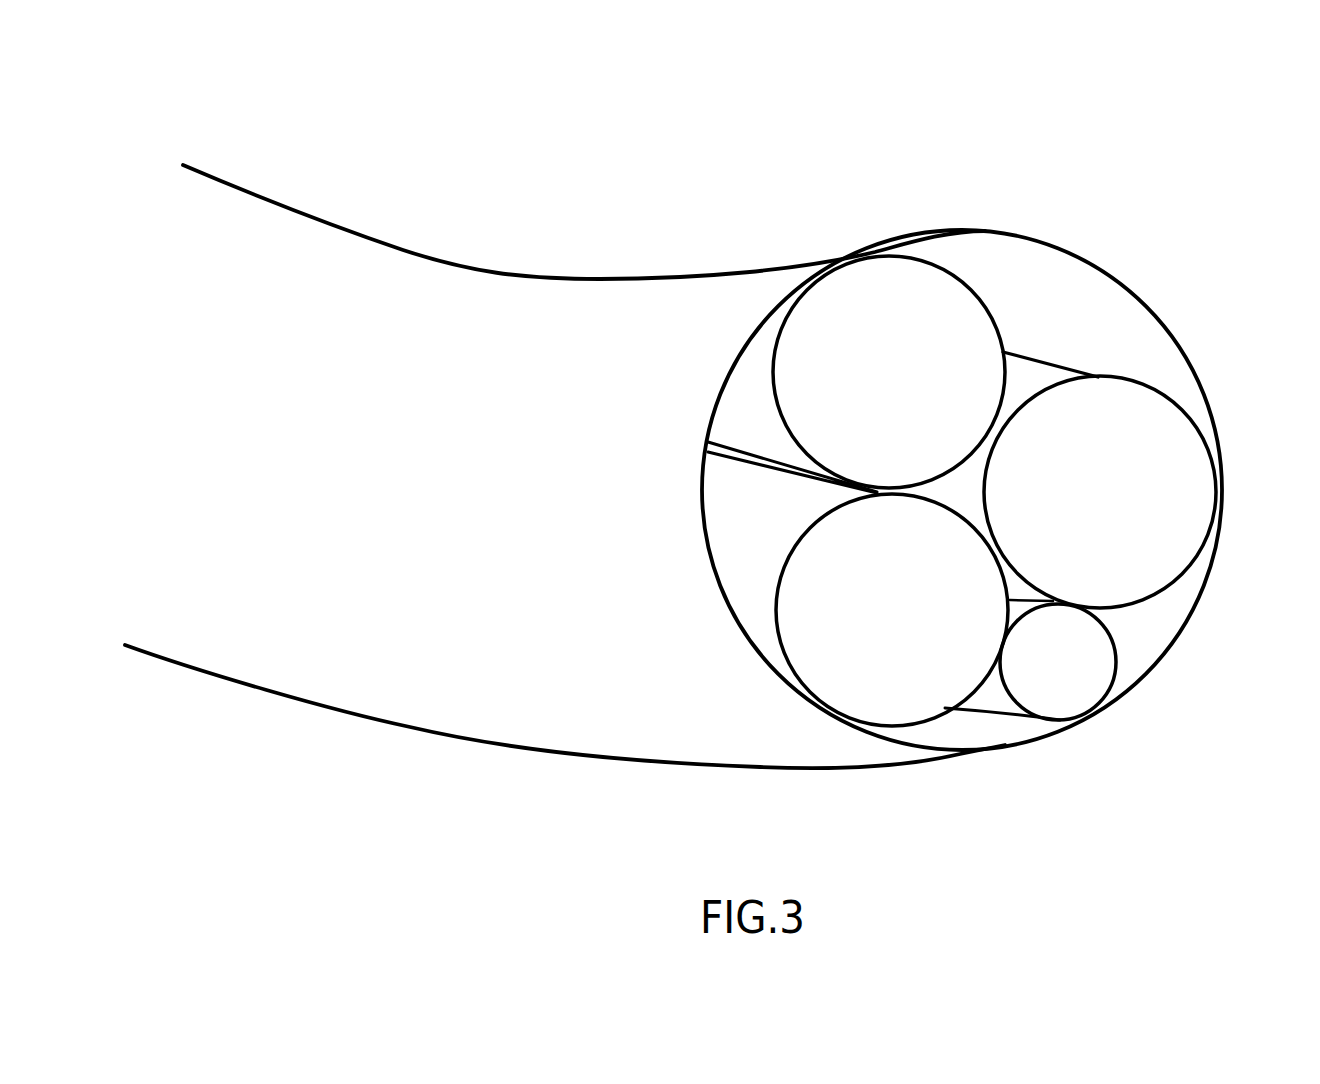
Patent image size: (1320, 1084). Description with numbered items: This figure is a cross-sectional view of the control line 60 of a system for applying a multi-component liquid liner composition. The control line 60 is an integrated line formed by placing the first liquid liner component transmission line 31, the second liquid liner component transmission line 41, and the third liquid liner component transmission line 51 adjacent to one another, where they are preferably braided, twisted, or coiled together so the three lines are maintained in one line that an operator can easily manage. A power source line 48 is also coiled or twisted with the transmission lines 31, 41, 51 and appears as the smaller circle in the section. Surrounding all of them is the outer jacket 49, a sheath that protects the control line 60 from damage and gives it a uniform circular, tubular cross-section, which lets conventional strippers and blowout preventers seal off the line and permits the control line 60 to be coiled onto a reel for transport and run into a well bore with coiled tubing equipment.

The control line 60 is at (1053, 190).
The outer jacket 49 is at (646, 278).
The first liquid liner component transmission line 31 is at (870, 277).
The second liquid liner component transmission line 41 is at (1163, 437).
The third liquid liner component transmission line 51 is at (898, 700).
The power source line 48 is at (1089, 683).